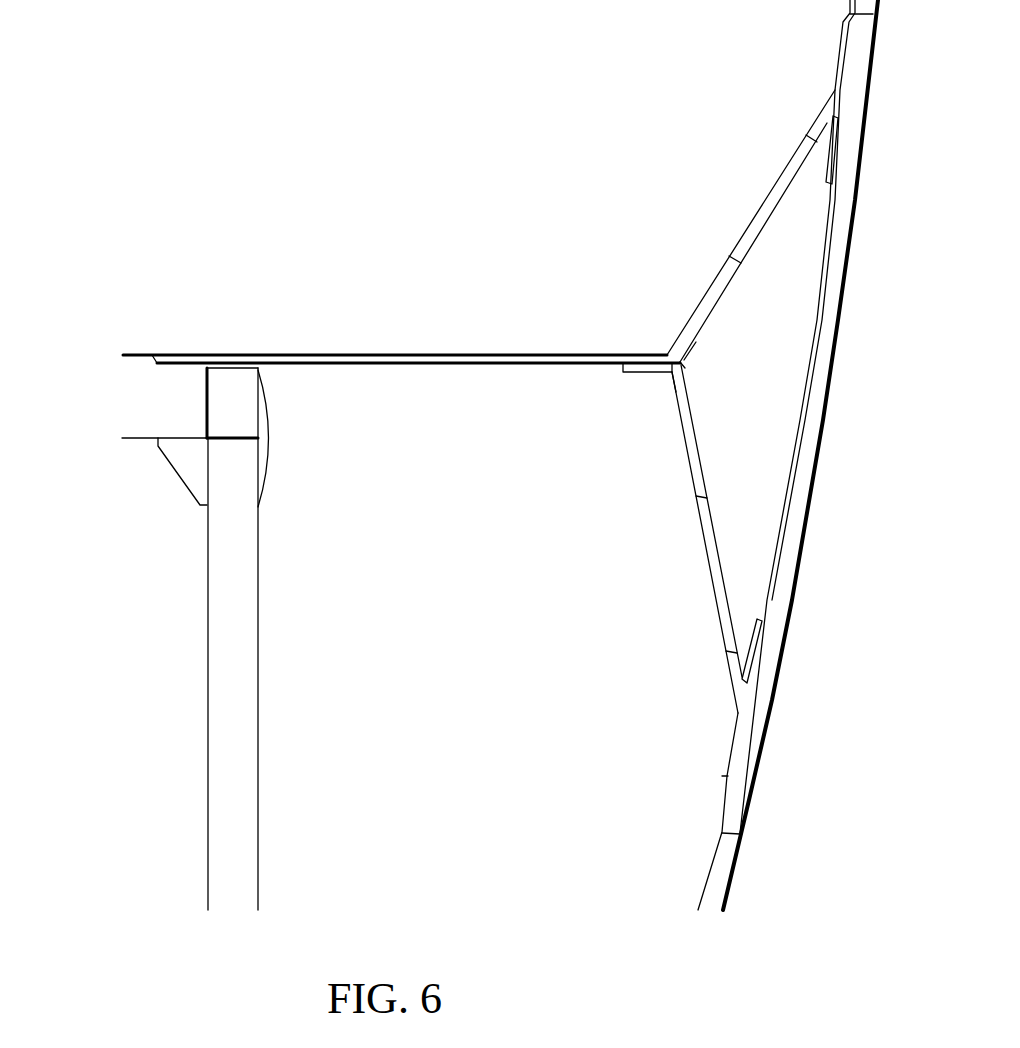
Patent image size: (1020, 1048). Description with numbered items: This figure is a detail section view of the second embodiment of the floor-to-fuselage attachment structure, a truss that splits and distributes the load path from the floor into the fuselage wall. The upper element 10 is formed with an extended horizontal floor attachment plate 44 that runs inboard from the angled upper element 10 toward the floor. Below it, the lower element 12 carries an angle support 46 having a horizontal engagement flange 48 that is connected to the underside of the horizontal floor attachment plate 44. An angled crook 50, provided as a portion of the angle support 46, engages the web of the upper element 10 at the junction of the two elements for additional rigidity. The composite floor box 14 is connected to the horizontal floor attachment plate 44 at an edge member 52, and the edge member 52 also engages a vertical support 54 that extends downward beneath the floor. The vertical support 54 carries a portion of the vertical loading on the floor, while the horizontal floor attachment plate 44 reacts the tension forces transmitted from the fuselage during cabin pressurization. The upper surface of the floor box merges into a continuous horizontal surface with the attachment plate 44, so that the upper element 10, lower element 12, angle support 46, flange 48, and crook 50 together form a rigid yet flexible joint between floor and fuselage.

The upper element 10 is at (721, 237).
The lower element 12 is at (690, 550).
The composite floor box 14 is at (128, 355).
The horizontal floor attachment plate 44 is at (352, 356).
The angle support 46 is at (661, 396).
The horizontal engagement flange 48 is at (652, 373).
The angled crook 50 is at (685, 363).
The edge member 52 is at (233, 405).
The vertical support 54 is at (235, 642).